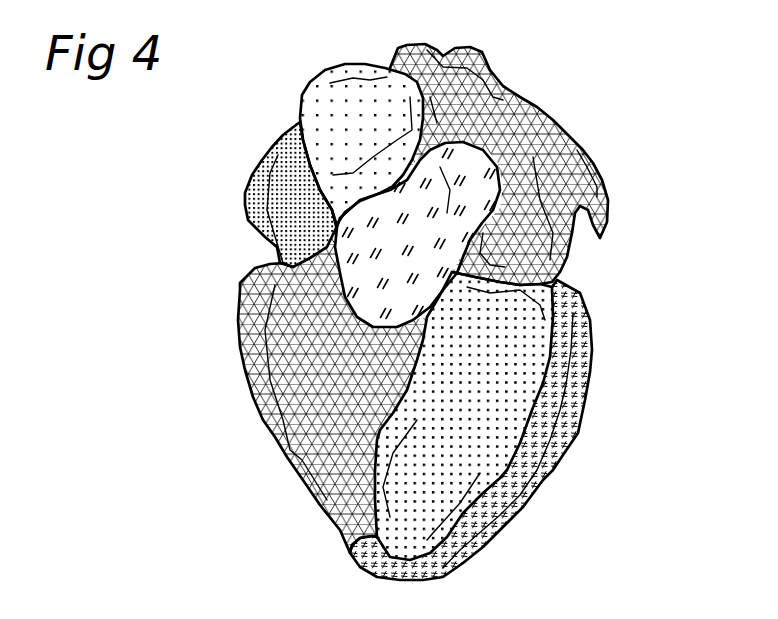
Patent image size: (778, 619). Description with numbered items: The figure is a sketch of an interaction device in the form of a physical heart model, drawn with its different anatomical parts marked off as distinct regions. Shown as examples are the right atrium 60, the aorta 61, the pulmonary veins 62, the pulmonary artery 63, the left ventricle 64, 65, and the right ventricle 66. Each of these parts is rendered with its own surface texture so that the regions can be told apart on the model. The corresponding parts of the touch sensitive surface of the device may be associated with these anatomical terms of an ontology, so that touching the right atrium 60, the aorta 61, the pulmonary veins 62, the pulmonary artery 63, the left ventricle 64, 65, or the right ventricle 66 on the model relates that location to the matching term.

The right atrium 60 is at (262, 178).
The aorta 61 is at (327, 93).
The pulmonary veins 62 is at (493, 107).
The pulmonary artery 63 is at (470, 190).
The left ventricle 64 is at (507, 333).
The left ventricle 65 is at (558, 432).
The right ventricle 66 is at (327, 433).